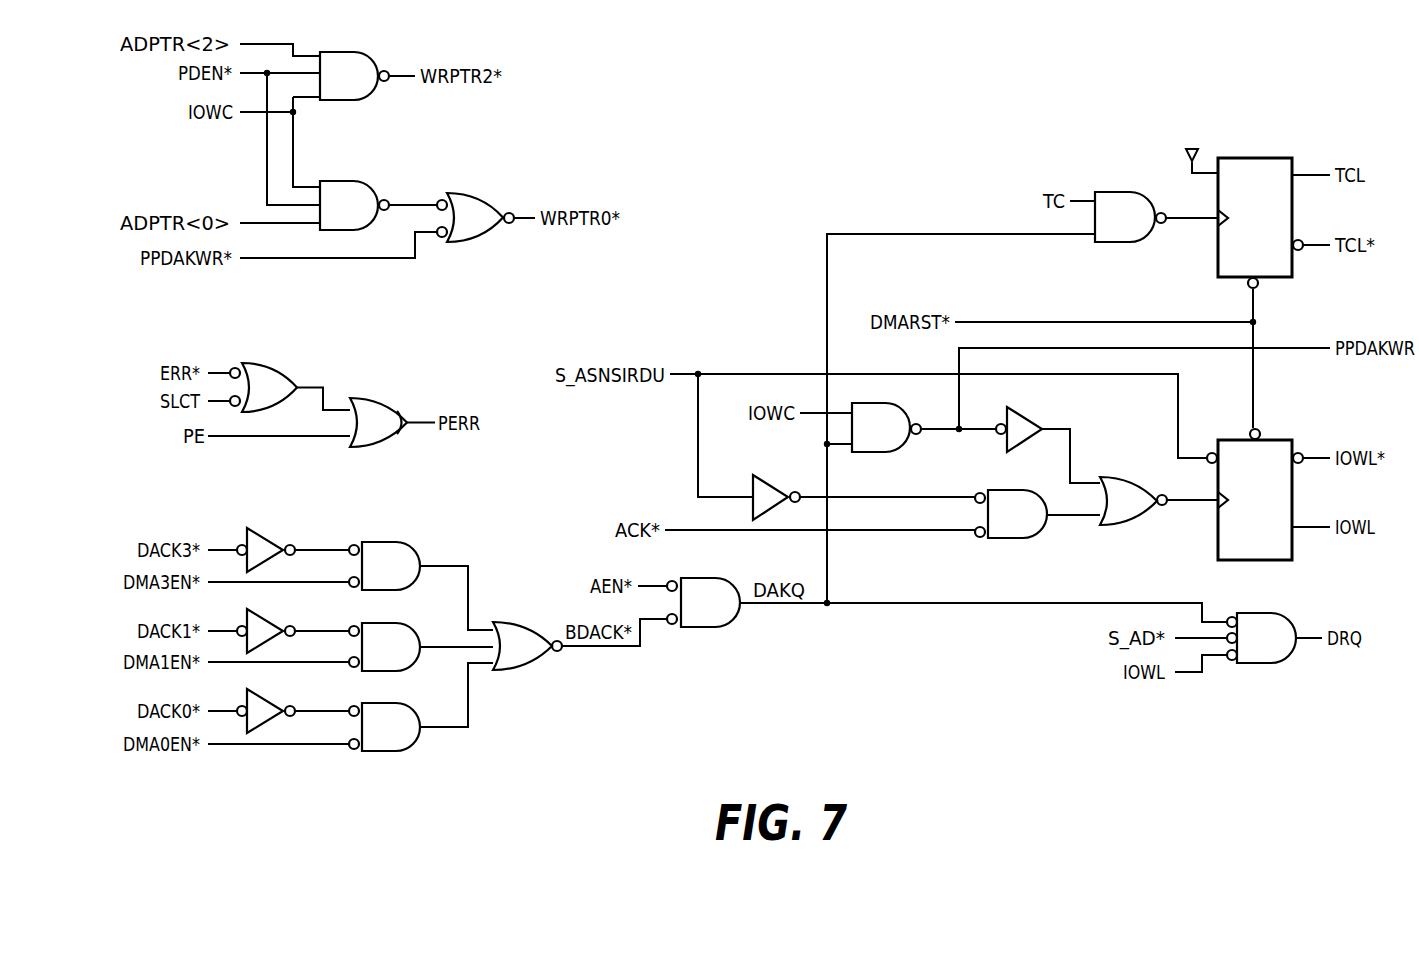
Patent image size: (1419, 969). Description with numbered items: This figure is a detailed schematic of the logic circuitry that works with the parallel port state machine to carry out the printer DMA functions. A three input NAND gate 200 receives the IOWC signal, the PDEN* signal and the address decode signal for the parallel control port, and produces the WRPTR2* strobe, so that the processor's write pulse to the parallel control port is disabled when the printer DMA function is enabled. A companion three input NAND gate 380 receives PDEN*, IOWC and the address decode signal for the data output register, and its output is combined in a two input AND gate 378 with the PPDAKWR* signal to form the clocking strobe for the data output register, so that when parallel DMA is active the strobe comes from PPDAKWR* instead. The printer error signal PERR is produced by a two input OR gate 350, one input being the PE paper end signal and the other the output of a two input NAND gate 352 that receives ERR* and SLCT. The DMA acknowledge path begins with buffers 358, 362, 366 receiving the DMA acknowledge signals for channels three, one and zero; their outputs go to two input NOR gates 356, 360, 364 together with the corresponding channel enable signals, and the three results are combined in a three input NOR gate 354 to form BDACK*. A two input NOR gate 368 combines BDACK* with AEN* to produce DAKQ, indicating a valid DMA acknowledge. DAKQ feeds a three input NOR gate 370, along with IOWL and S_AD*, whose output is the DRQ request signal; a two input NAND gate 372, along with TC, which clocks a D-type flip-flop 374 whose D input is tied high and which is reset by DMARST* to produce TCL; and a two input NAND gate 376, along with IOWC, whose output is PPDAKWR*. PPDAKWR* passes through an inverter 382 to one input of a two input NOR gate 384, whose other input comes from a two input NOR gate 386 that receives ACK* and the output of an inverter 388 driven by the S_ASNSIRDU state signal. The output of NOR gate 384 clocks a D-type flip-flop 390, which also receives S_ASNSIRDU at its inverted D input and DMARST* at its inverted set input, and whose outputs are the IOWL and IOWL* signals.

The three input NAND gate 200 is at (350, 52).
The three input NAND gate 380 is at (350, 181).
The two input AND gate 378 is at (474, 196).
The two input NAND gate 352 is at (268, 363).
The two input OR gate 350 is at (378, 398).
The buffer 358 is at (267, 533).
The two input NOR gate 356 is at (397, 542).
The buffer 362 is at (267, 614).
The two input NOR gate 360 is at (397, 623).
The buffer 366 is at (267, 694).
The two input NOR gate 364 is at (397, 703).
The three input NOR gate 354 is at (520, 670).
The two input NOR gate 368 is at (715, 627).
The inverter 388 is at (773, 476).
The two input NAND gate 376 is at (892, 452).
The inverter 382 is at (1026, 412).
The two input NOR gate 386 is at (1026, 538).
The two input NOR gate 384 is at (1126, 525).
The D-type flip-flop 390 is at (1269, 509).
The D-type flip-flop 374 is at (1271, 209).
The two input NAND gate 372 is at (1115, 192).
The three input NOR gate 370 is at (1268, 663).